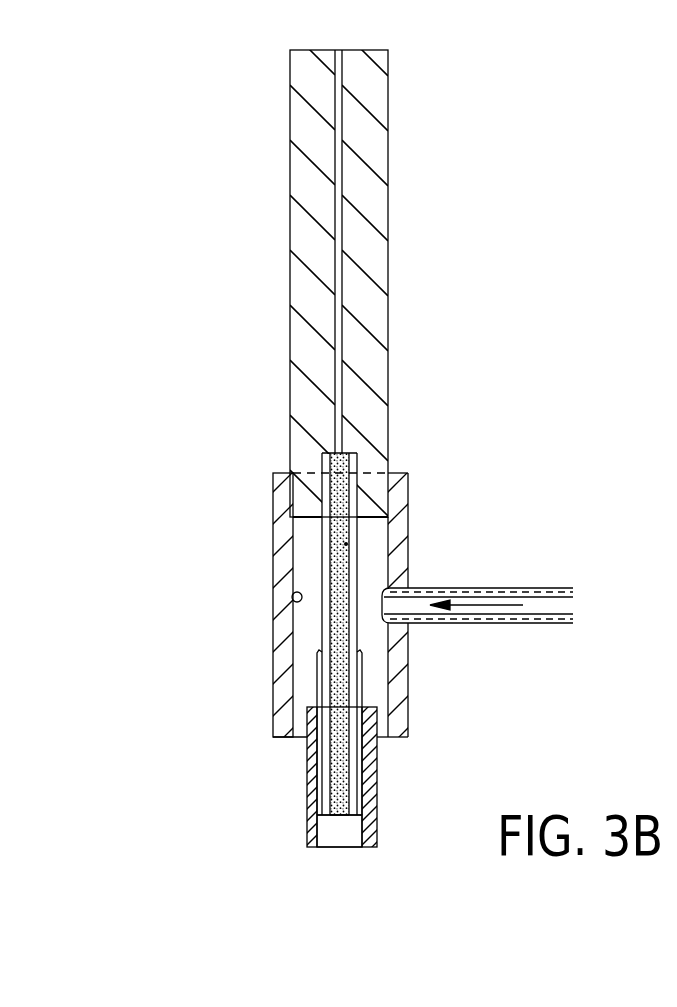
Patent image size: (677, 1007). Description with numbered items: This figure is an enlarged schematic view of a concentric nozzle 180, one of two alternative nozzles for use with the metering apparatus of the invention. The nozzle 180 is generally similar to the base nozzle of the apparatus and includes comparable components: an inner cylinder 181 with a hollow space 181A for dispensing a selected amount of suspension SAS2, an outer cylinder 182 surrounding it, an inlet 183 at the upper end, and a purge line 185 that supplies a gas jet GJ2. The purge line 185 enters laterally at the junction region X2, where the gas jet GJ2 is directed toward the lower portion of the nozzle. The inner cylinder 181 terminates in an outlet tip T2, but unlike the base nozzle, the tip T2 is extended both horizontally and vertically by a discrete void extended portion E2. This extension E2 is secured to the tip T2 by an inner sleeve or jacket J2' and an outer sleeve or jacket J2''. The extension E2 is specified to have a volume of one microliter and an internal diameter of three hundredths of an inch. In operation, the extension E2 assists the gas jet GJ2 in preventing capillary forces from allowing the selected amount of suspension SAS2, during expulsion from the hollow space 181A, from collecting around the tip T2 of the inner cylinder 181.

The concentric nozzle 180 is at (266, 76).
The inlet 183 is at (343, 52).
The inner cylinder 181 is at (322, 562).
The outer cylinder 182 is at (292, 597).
The purge line 185 is at (531, 588).
The hollow space 181A is at (346, 545).
The selected amount of suspension SAS2 is at (343, 492).
The junction block X2 is at (384, 632).
The gas jet GJ2 is at (512, 612).
The inner sleeve or jacket J2' is at (340, 731).
The outer sleeve or jacket J2'' is at (351, 777).
The outlet tip T2 is at (342, 804).
The discrete void extended portion E2 is at (341, 835).